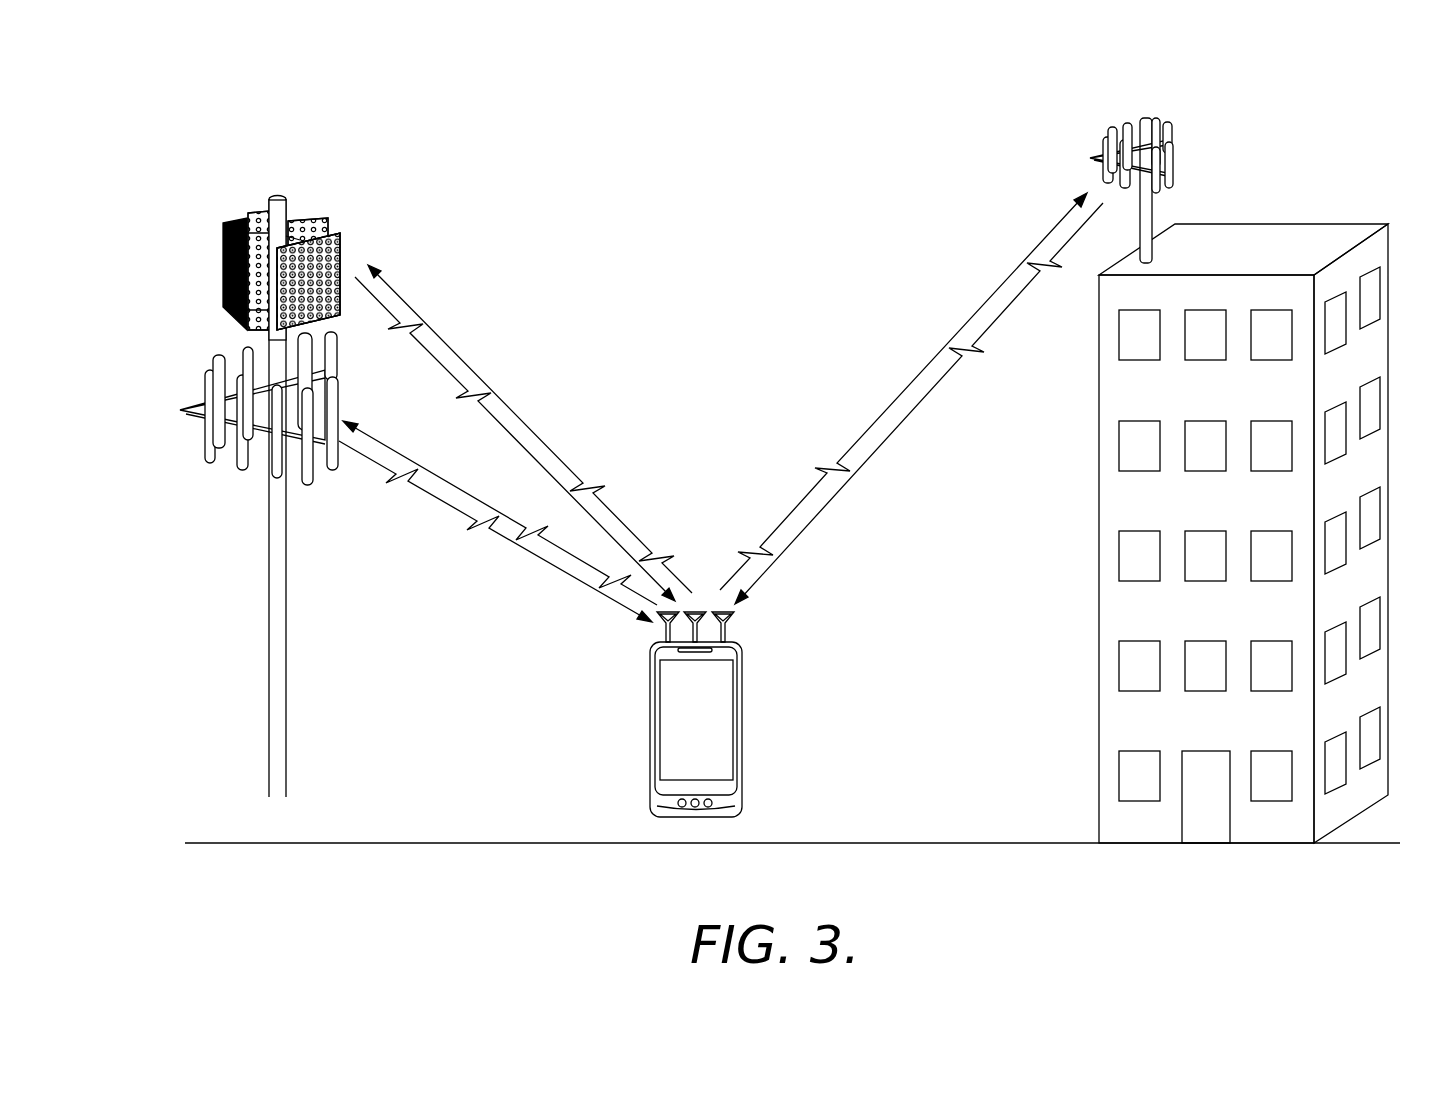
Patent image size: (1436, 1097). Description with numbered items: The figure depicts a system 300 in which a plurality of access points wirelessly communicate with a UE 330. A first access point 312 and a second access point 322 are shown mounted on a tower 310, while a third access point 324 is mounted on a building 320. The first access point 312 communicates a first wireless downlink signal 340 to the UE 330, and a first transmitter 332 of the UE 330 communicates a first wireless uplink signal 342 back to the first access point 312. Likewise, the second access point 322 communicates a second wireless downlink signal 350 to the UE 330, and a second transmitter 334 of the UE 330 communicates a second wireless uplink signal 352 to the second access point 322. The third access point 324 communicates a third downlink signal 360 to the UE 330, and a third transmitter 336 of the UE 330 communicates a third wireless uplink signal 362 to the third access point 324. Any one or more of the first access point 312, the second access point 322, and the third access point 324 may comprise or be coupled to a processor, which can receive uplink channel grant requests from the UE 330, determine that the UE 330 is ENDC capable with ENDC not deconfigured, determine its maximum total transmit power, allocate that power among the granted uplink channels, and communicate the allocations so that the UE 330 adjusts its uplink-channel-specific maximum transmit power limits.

The system 300 is at (1335, 110).
The first base station tower 310 is at (228, 561).
The first access point 312 is at (338, 250).
The building 320 is at (1178, 247).
The second access point 322 is at (237, 458).
The third access point 324 is at (1141, 121).
The UE 330 is at (650, 709).
The first transmitter 332 is at (661, 632).
The second transmitter 334 is at (697, 610).
The third transmitter 336 is at (729, 632).
The first wireless downlink signal 340 is at (512, 436).
The first wireless uplink signal 342 is at (479, 376).
The second wireless downlink signal 350 is at (558, 569).
The second wireless uplink signal 352 is at (379, 436).
The third downlink signal 360 is at (893, 436).
The third wireless uplink signal 362 is at (917, 378).